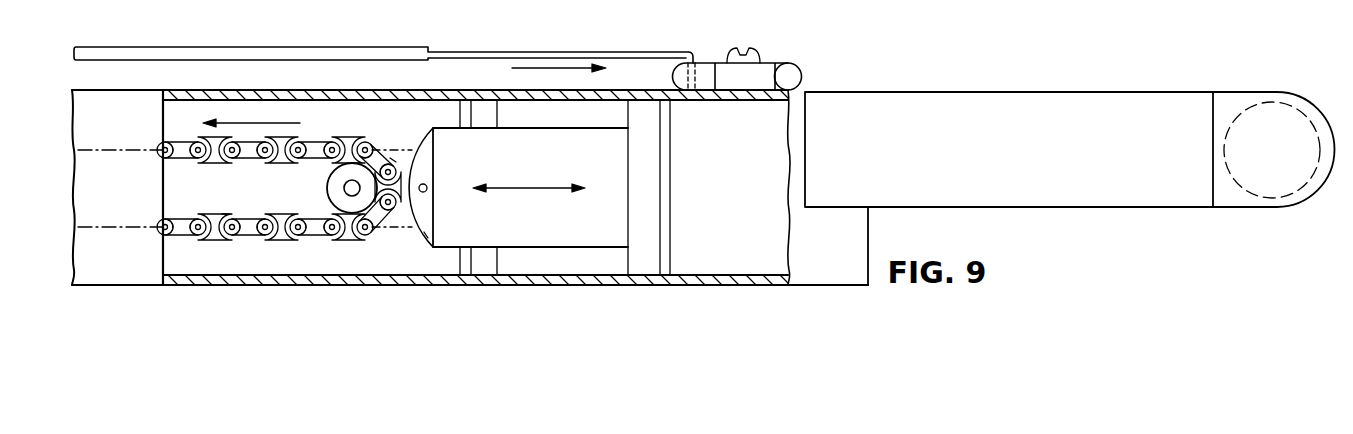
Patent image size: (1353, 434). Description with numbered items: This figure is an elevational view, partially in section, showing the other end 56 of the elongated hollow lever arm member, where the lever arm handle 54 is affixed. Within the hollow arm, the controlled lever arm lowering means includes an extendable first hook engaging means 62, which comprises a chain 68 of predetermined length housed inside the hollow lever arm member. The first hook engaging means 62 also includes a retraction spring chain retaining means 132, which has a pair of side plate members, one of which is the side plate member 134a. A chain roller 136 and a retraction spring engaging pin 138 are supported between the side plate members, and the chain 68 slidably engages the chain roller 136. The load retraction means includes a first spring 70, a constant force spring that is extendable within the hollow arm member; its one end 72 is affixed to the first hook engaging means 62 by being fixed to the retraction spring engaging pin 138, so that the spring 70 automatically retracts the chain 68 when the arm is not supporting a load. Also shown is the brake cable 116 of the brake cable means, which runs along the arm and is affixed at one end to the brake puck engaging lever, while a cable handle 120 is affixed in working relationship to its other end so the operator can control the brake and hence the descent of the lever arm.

The lever arm handle 54 is at (1105, 208).
The other end 56 is at (116, 286).
The first hook engaging means 62 is at (311, 137).
The chain 68 is at (266, 163).
The first spring 70 is at (556, 145).
The one end 72 is at (424, 232).
The brake cable 116 is at (588, 49).
The cable handle 120 is at (801, 72).
The retraction spring chain retaining means 132 is at (396, 160).
The side plate member 134a is at (434, 173).
The chain roller 136 is at (327, 184).
The retraction spring engaging pin 138 is at (427, 192).